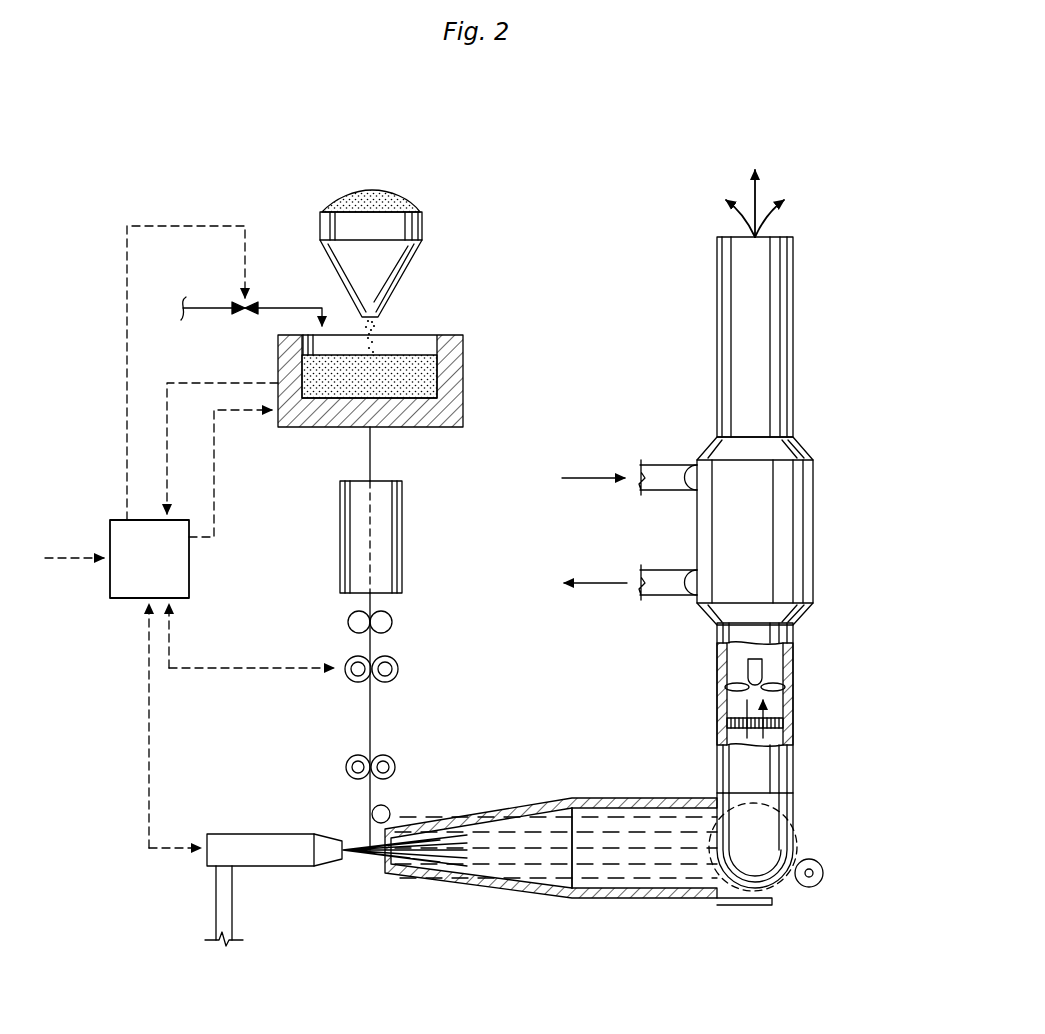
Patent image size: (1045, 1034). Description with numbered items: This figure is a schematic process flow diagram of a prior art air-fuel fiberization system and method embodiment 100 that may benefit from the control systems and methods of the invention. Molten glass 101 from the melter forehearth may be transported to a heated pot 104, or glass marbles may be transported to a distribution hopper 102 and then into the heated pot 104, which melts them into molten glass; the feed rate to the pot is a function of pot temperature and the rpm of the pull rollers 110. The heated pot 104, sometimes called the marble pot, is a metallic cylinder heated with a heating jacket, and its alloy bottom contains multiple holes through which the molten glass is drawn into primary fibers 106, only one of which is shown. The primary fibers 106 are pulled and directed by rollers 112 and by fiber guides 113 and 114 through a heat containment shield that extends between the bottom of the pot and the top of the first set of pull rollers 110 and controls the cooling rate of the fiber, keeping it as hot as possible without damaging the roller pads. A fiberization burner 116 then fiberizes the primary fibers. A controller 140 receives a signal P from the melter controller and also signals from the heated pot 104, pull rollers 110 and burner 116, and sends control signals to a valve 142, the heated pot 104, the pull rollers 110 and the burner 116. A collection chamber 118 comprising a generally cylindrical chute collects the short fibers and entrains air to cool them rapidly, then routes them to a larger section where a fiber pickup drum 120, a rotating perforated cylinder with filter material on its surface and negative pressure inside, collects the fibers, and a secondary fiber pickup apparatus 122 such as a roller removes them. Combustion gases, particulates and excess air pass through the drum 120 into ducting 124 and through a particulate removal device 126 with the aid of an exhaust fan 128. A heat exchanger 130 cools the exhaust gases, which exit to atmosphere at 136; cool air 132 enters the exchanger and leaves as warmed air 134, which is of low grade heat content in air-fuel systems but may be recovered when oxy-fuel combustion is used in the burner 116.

The air-fuel fiberization system and method embodiment 100 is at (732, 128).
The molten glass 101 is at (222, 305).
The distribution hopper 102 is at (320, 226).
The heated pot 104 is at (278, 362).
The primary fibers 106 is at (370, 446).
The pull rollers 110 is at (338, 680).
The rollers 112 is at (340, 766).
The fiber guide 113 is at (392, 617).
The fiber guide 114 is at (348, 622).
The fiberization burner 116 is at (258, 834).
The collection chamber 118 is at (585, 798).
The fiber pickup drum 120 is at (798, 840).
The secondary fiber pickup apparatus 122 is at (823, 868).
The ducting 124 is at (793, 776).
The particulate removal device 126 is at (788, 722).
The exhaust fan 128 is at (758, 666).
The heat exchanger 130 is at (813, 520).
The cool air 132 is at (593, 478).
The warmed air 134 is at (600, 583).
The exhaust exit to atmosphere 136 is at (800, 224).
The controller 140 is at (189, 567).
The valve 142 is at (252, 304).